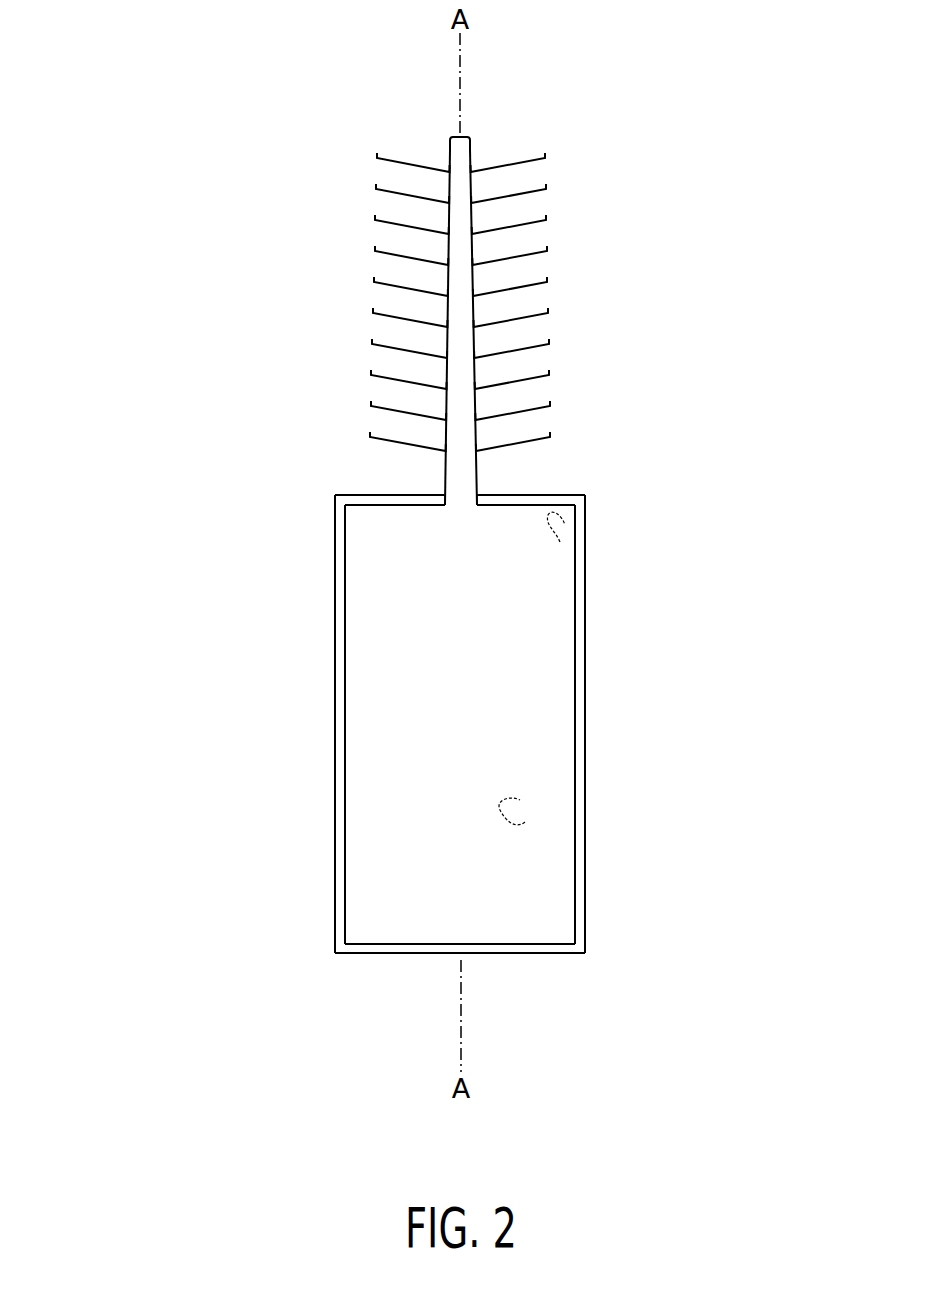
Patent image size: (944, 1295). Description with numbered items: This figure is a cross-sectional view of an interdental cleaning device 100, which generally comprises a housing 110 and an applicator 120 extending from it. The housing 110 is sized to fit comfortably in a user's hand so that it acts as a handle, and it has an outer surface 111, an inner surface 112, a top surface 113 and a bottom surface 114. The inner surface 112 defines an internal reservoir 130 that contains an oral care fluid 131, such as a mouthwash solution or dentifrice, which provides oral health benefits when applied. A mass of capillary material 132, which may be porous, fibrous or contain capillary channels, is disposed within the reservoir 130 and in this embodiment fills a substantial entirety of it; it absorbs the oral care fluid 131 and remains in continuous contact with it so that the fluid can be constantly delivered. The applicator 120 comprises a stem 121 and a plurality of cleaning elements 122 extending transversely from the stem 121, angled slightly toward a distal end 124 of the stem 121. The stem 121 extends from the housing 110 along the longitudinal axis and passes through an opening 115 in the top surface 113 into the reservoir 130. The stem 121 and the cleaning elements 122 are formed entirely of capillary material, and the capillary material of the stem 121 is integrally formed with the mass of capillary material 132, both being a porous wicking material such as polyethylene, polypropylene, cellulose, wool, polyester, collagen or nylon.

The interdental cleaning device 100 is at (140, 227).
The housing 110 is at (335, 717).
The outer surface 111 is at (335, 832).
The inner surface 112 is at (345, 933).
The top surface 113 is at (572, 493).
The bottom surface 114 is at (547, 953).
The opening 115 is at (443, 502).
The applicator 120 is at (343, 245).
The stem 121 is at (447, 235).
The cleaning elements 122 is at (545, 153).
The distal end 124 is at (469, 135).
The internal reservoir 130 is at (400, 593).
The oral care fluid 131 is at (560, 542).
The mass of capillary material 132 is at (525, 822).